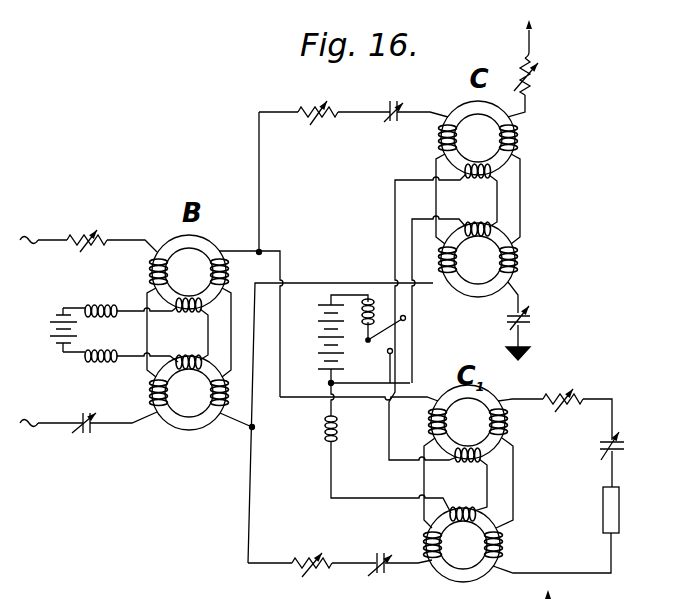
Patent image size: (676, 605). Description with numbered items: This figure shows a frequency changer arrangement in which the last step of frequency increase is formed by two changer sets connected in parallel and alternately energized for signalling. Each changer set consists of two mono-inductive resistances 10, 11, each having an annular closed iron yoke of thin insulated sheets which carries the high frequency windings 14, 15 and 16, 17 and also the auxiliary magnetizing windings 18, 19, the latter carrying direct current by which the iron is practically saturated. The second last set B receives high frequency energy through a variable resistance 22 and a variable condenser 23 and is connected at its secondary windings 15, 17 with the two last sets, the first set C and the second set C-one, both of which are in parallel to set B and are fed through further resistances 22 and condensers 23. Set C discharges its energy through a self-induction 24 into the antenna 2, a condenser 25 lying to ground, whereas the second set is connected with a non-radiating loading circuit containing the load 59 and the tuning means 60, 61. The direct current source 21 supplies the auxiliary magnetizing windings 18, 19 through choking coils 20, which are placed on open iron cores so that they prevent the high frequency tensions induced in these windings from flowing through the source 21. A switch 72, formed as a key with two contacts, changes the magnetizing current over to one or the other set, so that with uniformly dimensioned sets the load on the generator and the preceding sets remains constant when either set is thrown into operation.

The antenna 2 is at (533, 50).
The mono-inductive resistance 10 is at (333, 280).
The mono-inductive resistance 11 is at (333, 402).
The winding 14 is at (430, 422).
The secondary winding 15 is at (518, 424).
The winding 16 is at (427, 543).
The secondary winding 17 is at (513, 543).
The auxiliary magnetizing winding 18 is at (333, 325).
The auxiliary magnetizing winding 19 is at (333, 360).
The choking coil 20 is at (337, 430).
The direct current source 21 is at (319, 344).
The variable resistance 22 is at (202, 326).
The variable condenser 23 is at (241, 326).
The self-induction 24 is at (542, 77).
The condenser 25 is at (534, 321).
The ballast 59 is at (603, 510).
The tuning means 60 is at (563, 389).
The tuning means 61 is at (628, 444).
The switch 72 is at (382, 337).